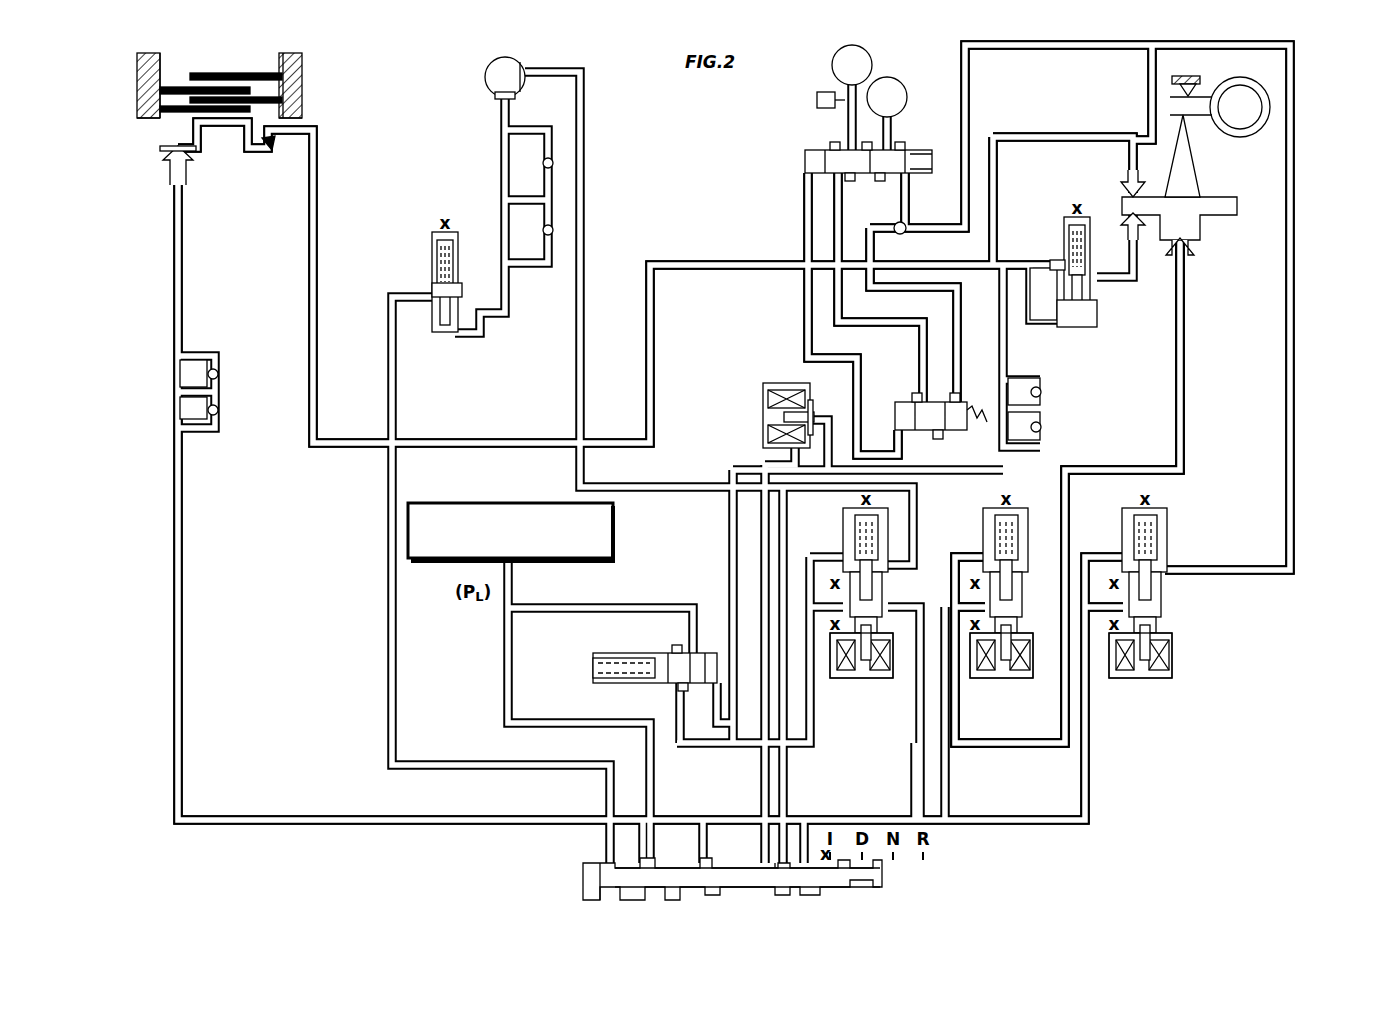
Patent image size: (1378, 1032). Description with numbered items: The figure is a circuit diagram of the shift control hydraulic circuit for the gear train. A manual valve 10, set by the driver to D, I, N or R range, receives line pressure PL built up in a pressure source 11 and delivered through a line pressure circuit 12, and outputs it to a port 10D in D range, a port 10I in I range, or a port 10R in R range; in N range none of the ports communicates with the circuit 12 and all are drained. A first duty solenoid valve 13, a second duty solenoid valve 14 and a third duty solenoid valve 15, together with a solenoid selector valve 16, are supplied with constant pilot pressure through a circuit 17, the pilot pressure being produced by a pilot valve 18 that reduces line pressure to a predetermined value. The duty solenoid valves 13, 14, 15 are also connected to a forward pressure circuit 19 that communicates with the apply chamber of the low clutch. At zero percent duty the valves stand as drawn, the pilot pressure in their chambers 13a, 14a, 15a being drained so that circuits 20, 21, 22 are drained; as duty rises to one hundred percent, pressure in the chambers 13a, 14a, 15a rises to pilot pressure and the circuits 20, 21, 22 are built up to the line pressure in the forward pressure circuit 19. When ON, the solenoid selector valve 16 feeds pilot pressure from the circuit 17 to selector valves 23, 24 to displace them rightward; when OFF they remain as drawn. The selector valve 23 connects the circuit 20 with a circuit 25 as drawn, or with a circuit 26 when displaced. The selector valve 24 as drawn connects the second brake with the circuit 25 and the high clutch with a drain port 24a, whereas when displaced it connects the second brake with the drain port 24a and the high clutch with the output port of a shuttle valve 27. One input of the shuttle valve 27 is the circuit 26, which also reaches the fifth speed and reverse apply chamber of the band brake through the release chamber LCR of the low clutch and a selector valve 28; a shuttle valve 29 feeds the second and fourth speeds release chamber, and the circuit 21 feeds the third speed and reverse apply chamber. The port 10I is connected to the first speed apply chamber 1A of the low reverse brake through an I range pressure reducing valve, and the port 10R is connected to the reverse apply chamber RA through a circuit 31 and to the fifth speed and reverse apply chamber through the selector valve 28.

The manual valve 10 is at (812, 899).
The port 10I is at (603, 862).
The port 10D is at (655, 862).
The port 10R is at (778, 862).
The pressure source 11 is at (615, 545).
The circuit 12 is at (505, 698).
The first duty solenoid valve 13 is at (871, 690).
The chamber 13a is at (875, 606).
The second duty solenoid valve 14 is at (1009, 690).
The chamber 14a is at (1015, 606).
The third duty solenoid valve 15 is at (1147, 690).
The chamber 15a is at (1157, 603).
The solenoid selector valve 16 is at (776, 378).
The circuit 17 is at (728, 572).
The pilot valve 18 is at (646, 652).
The forward pressure circuit 19 is at (345, 820).
The circuit 20 is at (916, 525).
The circuit 21 is at (1066, 530).
The circuit 22 is at (1290, 538).
The selector valve 23 is at (901, 395).
The selector valve 24 is at (805, 127).
The drain port 24a is at (865, 185).
The circuit 25 is at (940, 318).
The circuit 26 is at (900, 283).
The shuttle valve 27 is at (910, 224).
The selector valve 28 is at (1076, 333).
The shuttle valve 29 is at (1133, 130).
The circuit 31 is at (784, 495).
The first speed apply chamber 1A is at (492, 97).
The release chamber LCR is at (272, 150).
The reverse apply chamber RA is at (525, 70).